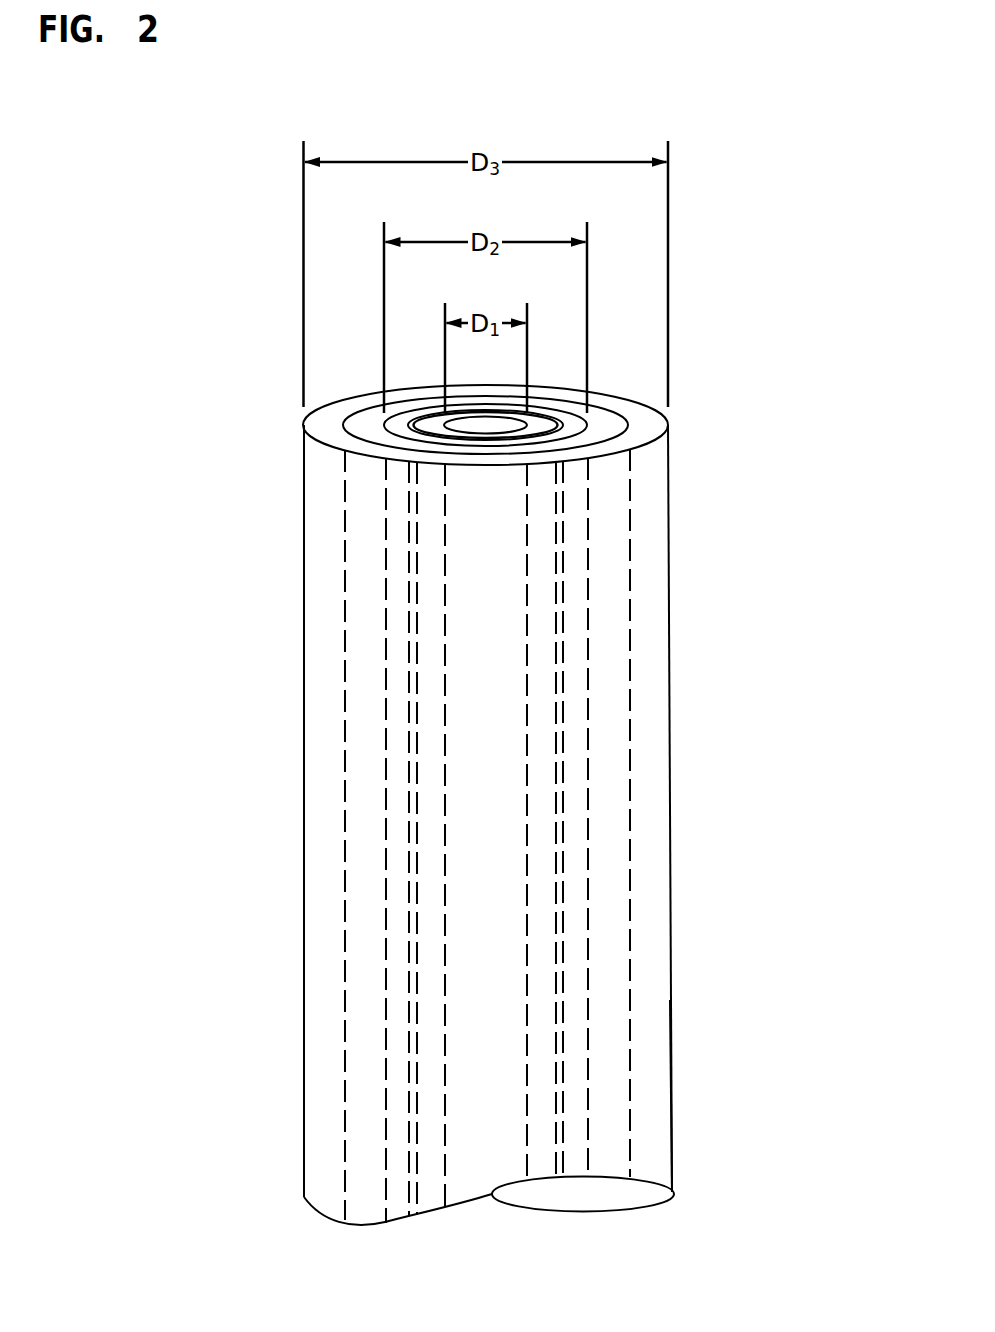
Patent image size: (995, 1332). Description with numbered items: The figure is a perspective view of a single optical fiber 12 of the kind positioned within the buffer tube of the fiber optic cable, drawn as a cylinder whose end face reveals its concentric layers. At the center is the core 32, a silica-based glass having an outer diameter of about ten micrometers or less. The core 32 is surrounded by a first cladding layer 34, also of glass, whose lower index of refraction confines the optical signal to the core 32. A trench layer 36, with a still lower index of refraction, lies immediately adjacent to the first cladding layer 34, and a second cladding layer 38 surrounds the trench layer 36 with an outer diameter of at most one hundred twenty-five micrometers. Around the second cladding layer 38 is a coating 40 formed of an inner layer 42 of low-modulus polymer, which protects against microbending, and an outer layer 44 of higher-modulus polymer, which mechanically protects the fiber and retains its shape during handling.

The optical fiber 12 is at (220, 430).
The core 32 is at (527, 563).
The first cladding layer 34 is at (556, 717).
The trench layer 36 is at (411, 952).
The second cladding layer 38 is at (387, 860).
The coating 40 is at (683, 962).
The inner layer 42 is at (632, 887).
The outer layer 44 is at (672, 1100).